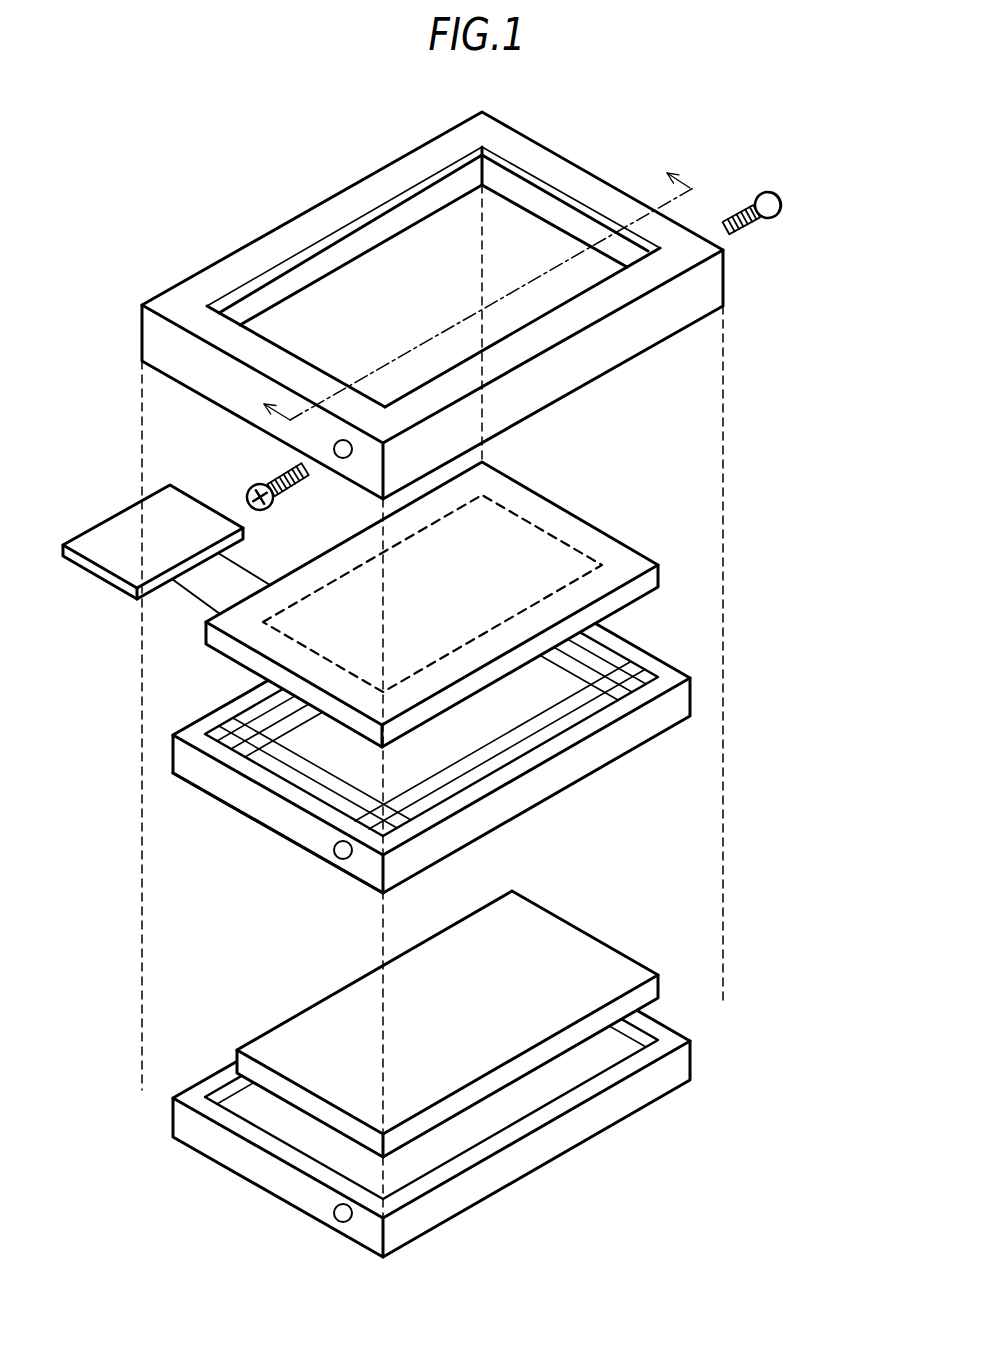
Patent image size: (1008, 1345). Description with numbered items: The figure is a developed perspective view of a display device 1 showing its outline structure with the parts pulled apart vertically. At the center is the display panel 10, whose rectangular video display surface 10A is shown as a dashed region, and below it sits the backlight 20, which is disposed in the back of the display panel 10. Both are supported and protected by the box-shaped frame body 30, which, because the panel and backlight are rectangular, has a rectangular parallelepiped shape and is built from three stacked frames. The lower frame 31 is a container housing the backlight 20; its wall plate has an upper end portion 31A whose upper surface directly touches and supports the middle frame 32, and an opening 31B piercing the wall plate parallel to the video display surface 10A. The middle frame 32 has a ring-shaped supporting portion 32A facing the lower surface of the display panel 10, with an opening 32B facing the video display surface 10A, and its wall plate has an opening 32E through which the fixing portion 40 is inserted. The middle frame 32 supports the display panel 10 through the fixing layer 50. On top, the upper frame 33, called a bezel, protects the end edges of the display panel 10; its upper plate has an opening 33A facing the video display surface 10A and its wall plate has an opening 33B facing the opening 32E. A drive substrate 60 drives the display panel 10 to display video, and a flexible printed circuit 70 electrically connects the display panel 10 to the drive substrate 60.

The display device 1 is at (679, 125).
The display panel 10 is at (460, 603).
The video display surface 10A is at (507, 537).
The backlight 20 is at (545, 940).
The frame body 30 is at (496, 1095).
The lower frame 31 is at (496, 1095).
The upper end portion 31A is at (199, 1089).
The opening 31B is at (327, 1215).
The middle frame 32 is at (496, 735).
The supporting portion 32A is at (592, 670).
The opening 32B is at (355, 777).
The opening 32E is at (327, 855).
The upper frame 33 is at (483, 305).
The opening 33A is at (397, 267).
The opening 33B is at (331, 447).
The fixing portion 40 is at (790, 199).
The fixing layer 50 is at (607, 663).
The drive substrate 60 is at (112, 557).
The flexible printed circuit 70 is at (208, 590).